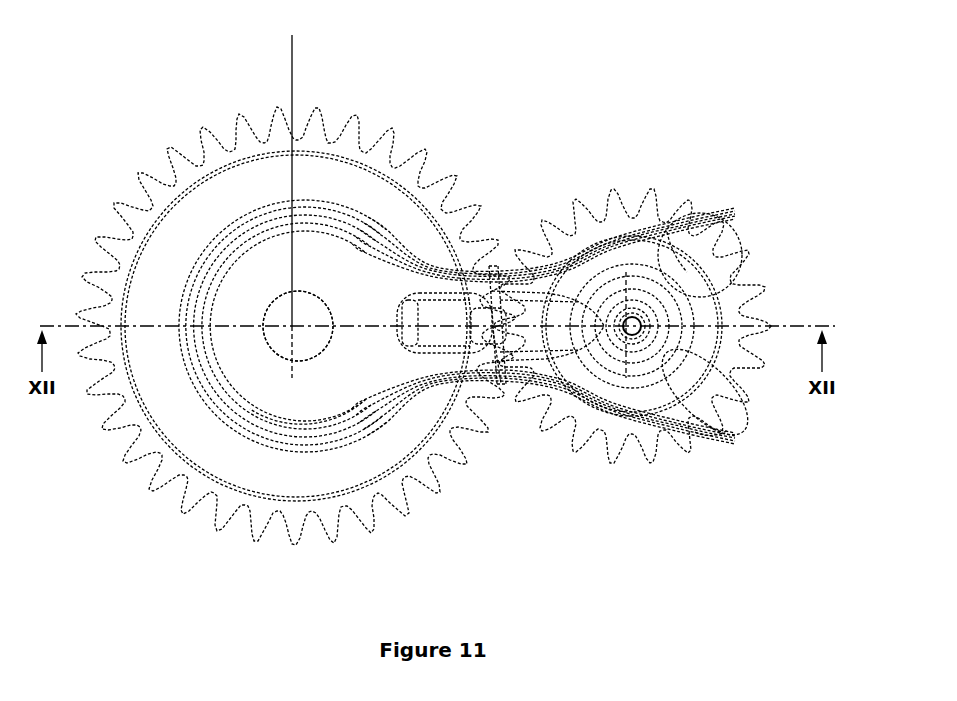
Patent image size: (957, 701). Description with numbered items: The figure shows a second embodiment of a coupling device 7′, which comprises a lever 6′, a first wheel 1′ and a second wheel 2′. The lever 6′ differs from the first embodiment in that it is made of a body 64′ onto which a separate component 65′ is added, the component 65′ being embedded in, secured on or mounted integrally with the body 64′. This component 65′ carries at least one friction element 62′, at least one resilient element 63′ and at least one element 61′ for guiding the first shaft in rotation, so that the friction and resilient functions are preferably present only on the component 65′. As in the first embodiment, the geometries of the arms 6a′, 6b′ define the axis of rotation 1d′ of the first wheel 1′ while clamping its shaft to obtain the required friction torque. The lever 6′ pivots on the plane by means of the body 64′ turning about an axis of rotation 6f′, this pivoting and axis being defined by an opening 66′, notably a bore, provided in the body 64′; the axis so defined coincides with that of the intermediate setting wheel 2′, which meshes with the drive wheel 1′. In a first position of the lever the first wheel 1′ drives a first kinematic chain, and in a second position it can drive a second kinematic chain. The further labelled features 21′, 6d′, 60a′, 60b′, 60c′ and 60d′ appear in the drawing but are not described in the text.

The intermediate setting wheel 2′ is at (182, 158).
The axis of the toothed wheel 21′ is at (300, 194).
The axis of rotation 6f′ is at (292, 326).
The lever 6′ is at (381, 252).
The lever arm portion 6d′ is at (436, 314).
The arm 6a′ is at (485, 290).
The arm 6b′ is at (485, 360).
The resilient element 63′ is at (528, 278).
The coupling device 7′ is at (541, 121).
The first wheel 1′ is at (619, 171).
The axis of rotation of the first wheel 1d′ is at (641, 329).
The element for guiding in rotation 61′ is at (643, 258).
The friction element 62′ is at (626, 390).
The first portion of the anchor body 60a′ is at (598, 305).
The third portion of the anchor body 60c′ is at (598, 347).
The upper lobe of the anchor body 60b′ is at (662, 295).
The lower lobe of the anchor body 60d′ is at (662, 355).
The component 65′ is at (716, 415).
The opening 66′ is at (278, 347).
The body of the lever 64′ is at (280, 414).